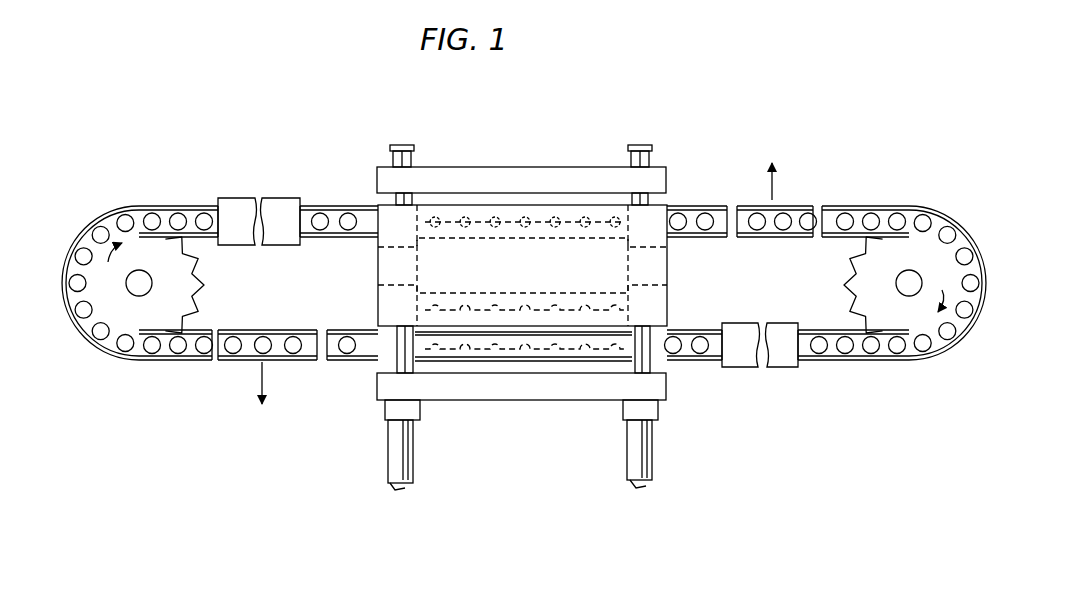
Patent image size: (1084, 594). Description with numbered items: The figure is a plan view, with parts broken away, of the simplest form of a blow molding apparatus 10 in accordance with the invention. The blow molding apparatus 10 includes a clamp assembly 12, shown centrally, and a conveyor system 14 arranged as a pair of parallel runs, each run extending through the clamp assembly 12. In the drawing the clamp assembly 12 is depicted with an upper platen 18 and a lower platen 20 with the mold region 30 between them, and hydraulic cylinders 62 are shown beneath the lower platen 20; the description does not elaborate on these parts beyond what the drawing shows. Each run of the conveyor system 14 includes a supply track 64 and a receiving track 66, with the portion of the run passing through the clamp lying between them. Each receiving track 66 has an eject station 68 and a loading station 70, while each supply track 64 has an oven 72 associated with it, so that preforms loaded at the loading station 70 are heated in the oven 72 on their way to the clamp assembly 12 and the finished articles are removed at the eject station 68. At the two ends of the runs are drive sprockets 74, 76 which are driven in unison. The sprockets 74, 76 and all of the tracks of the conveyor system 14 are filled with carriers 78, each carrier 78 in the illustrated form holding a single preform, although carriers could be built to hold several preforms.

The blow molding apparatus 10 is at (699, 112).
The clamp 12 is at (590, 144).
The conveyor system 14 is at (842, 371).
The upper platen 18 is at (470, 172).
The lower platen 20 is at (455, 388).
The mold 30 is at (378, 266).
The hydraulic cylinder 62 is at (400, 460).
The supply track 64 is at (331, 207).
The receiving track 66 is at (350, 362).
The eject station 68 is at (249, 383).
The loading station 70 is at (215, 393).
The oven 72 is at (287, 200).
The drive sprocket 74 is at (178, 291).
The drive sprocket 76 is at (915, 248).
The carrier 78 is at (268, 342).